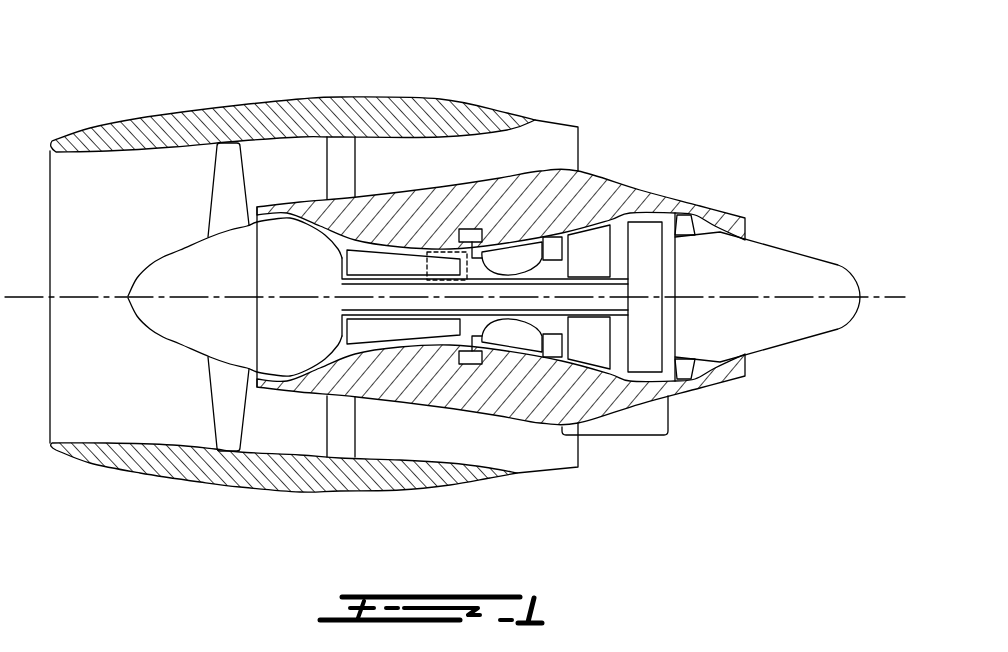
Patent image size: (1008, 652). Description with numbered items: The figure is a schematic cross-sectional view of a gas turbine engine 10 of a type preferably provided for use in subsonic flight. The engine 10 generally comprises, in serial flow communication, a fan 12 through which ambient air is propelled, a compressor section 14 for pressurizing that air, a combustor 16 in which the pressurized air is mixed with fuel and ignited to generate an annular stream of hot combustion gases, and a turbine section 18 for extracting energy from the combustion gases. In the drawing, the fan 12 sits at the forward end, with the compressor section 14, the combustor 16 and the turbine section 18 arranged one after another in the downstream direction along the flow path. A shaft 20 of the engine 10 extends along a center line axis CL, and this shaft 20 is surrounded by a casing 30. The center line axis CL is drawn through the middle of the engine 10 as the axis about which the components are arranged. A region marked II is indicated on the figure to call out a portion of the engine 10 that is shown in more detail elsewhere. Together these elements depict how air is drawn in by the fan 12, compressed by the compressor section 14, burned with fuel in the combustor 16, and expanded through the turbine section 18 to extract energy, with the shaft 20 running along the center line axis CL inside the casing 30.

The gas turbine engine 10 is at (723, 142).
The fan 12 is at (228, 402).
The compressor section 14 is at (387, 262).
The combustor 16 is at (517, 330).
The turbine section 18 is at (612, 437).
The shaft 20 is at (615, 280).
The casing 30 is at (537, 170).
The center line axis CL is at (898, 295).
The region II is at (440, 282).